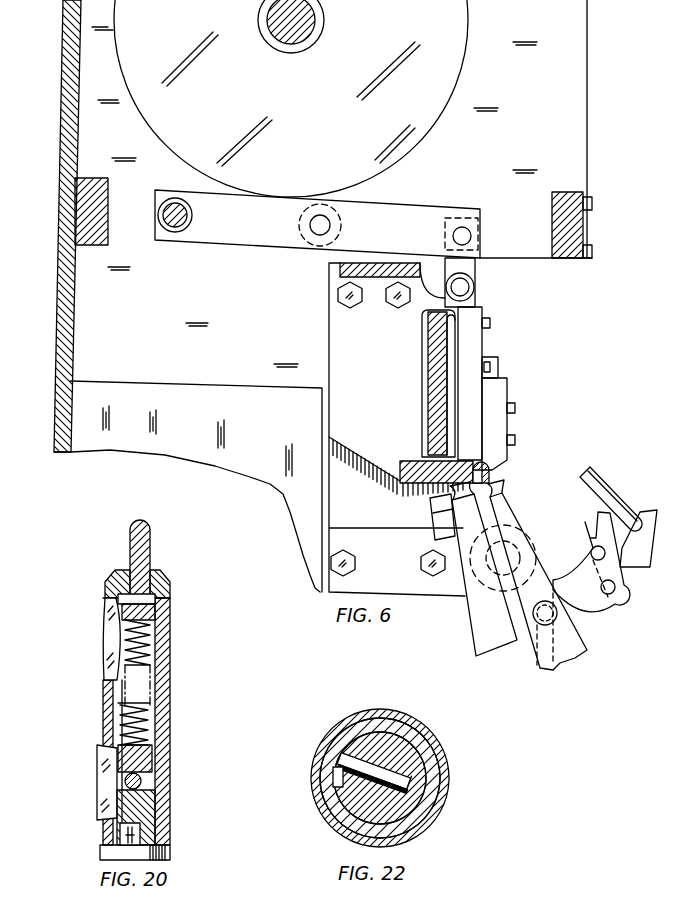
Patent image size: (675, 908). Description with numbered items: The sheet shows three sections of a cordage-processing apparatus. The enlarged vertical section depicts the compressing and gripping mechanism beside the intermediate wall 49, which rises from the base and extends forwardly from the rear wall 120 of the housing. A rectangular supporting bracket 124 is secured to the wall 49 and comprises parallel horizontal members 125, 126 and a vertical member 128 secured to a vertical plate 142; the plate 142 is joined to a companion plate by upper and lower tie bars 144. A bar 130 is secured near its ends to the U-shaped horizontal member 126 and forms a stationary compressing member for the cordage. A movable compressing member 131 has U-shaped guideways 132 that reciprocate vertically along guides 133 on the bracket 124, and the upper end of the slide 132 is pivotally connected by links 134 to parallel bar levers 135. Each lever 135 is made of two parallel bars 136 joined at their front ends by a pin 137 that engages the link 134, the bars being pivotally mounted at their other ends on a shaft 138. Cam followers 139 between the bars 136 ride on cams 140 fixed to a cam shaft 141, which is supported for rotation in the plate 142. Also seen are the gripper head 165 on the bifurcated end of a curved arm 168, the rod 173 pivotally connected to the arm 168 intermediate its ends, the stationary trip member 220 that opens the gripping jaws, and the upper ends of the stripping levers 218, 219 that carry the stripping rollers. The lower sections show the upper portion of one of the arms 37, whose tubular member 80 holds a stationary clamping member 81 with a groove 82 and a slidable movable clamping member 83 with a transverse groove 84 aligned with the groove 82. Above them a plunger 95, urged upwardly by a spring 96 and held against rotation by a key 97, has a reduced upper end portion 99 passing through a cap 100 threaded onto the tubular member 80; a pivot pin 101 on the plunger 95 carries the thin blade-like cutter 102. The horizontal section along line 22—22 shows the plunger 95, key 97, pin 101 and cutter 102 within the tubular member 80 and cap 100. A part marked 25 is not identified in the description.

In FIG. 6, the rear wall 120 is at (62, 86).
In FIG. 6, the cams 140 is at (418, 145).
In FIG. 6, the cam shaft 141 is at (318, 20).
In FIG. 6, the vertical plate 142 is at (587, 92).
In FIG. 6, the tie bars 144 is at (76, 217).
In FIG. 6, the parallel bars 136 is at (247, 243).
In FIG. 6, the parallel bar levers 135 is at (450, 190).
In FIG. 6, the shaft 138 is at (192, 215).
In FIG. 6, the cam followers 139 is at (332, 222).
In FIG. 6, the pin 137 is at (472, 236).
In FIG. 6, the horizontal member 125 is at (340, 270).
In FIG. 6, the links 134 is at (463, 268).
In FIG. 6, the vertical member 128 is at (336, 298).
In FIG. 6, the rectangular supporting bracket 124 is at (321, 337).
In FIG. 6, the movable compressing member 131 is at (423, 358).
In FIG. 6, the guides 133 is at (430, 335).
In FIG. 6, the U-shaped guideways 132 is at (432, 380).
In FIG. 6, the horizontal frame member 126 is at (410, 461).
In FIG. 6, the bar 130 is at (489, 477).
In FIG. 6, the stripping lever 219 is at (458, 544).
In FIG. 6, the stripping lever 218 is at (508, 510).
In FIG. 6, the rod 173 is at (530, 668).
In FIG. 6, the curved arm 168 is at (606, 615).
In FIG. 6, the gripper head 165 is at (610, 623).
In FIG. 6, the stationary trip member 220 is at (602, 490).
In FIG. 6, the intermediate wall 49 is at (160, 458).
In FIG. 20, the tubular member 80 is at (172, 634).
In FIG. 22, the tubular member 80 is at (345, 742).
In FIG. 20, the reduced upper end portion 99 is at (150, 544).
In FIG. 20, the plunger 95 is at (160, 559).
In FIG. 22, the plunger 95 is at (337, 830).
In FIG. 20, the cap 100 is at (126, 580).
In FIG. 22, the cap 100 is at (420, 752).
In FIG. 20, the section line 22— 22 is at (186, 591).
In FIG. 20, the pivot pin 101 is at (170, 608).
In FIG. 22, the pivot pin 101 is at (337, 768).
In FIG. 20, the cutter 102 is at (158, 656).
In FIG. 22, the cutter 102 is at (418, 763).
In FIG. 20, the key 97 is at (112, 636).
In FIG. 22, the key 97 is at (340, 790).
In FIG. 20, the arms 37 is at (188, 697).
In FIG. 20, the spring 96 is at (148, 714).
In FIG. 20, the stationary clamping member 81 is at (118, 758).
In FIG. 20, the bore 25 is at (156, 768).
In FIG. 20, the groove 82 is at (125, 780).
In FIG. 20, the transversely extending groove 84 is at (118, 795).
In FIG. 20, the movable clamping member 83 is at (152, 815).